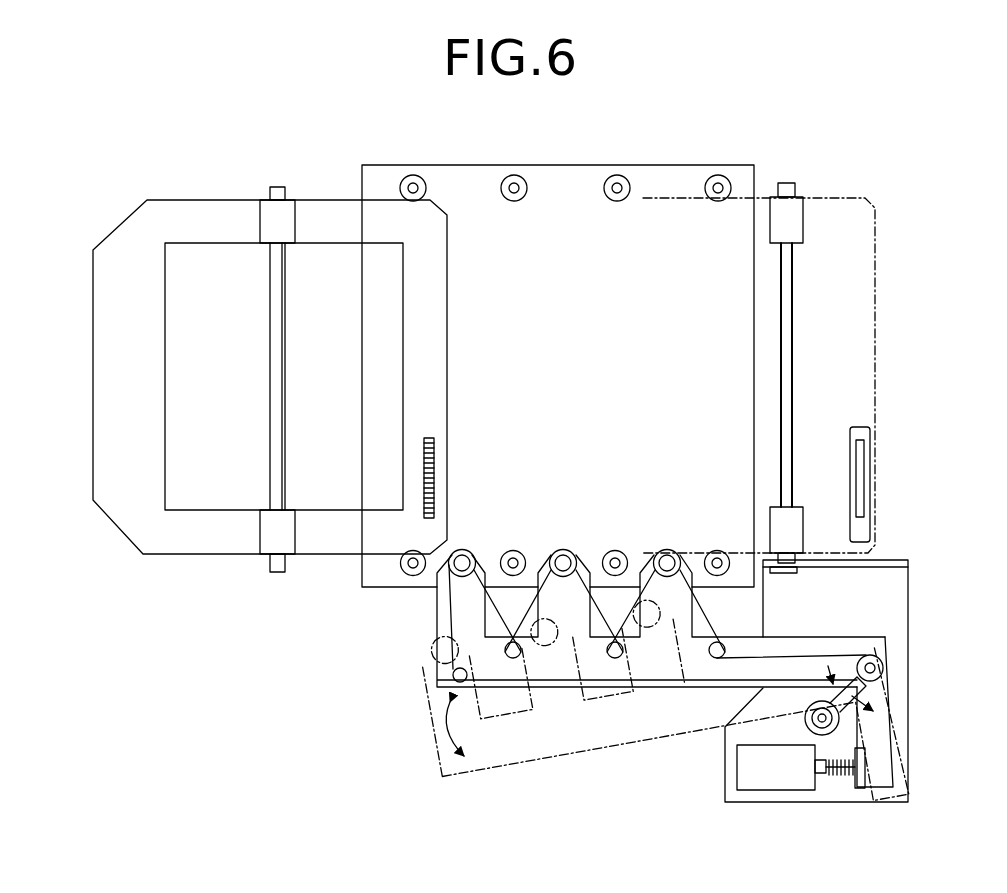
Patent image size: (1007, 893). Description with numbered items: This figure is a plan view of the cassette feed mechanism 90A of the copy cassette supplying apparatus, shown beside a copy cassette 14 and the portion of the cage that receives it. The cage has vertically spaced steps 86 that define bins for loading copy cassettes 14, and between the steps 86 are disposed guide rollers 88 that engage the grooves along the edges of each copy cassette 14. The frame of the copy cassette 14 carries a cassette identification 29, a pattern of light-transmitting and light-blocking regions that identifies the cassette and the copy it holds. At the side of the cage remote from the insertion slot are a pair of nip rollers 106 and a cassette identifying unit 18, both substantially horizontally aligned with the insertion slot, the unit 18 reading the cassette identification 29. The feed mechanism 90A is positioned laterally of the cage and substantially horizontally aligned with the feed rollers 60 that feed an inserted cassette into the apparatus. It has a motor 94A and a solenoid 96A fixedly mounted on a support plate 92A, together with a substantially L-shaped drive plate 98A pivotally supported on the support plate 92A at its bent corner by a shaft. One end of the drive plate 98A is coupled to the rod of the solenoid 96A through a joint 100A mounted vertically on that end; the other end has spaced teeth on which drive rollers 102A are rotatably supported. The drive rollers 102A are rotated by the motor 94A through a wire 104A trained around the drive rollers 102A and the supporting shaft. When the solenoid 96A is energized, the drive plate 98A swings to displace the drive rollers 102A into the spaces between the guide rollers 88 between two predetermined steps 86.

The copy cassette 14 is at (91, 506).
The cassette identifying unit 18 is at (862, 530).
The cassette identification 29 is at (434, 488).
The feed rollers 60 is at (277, 305).
The steps 86 is at (667, 180).
The guide rollers 88 is at (515, 176).
The cassette feed mechanism 90A is at (422, 688).
The support plate 92A is at (877, 602).
The motor 94A is at (806, 718).
The solenoid 96A is at (786, 782).
The drive plate 98A is at (885, 692).
The joint 100A is at (869, 782).
The drive rollers 102A is at (675, 550).
The wire 104A is at (752, 655).
The nip rollers 106 is at (793, 280).